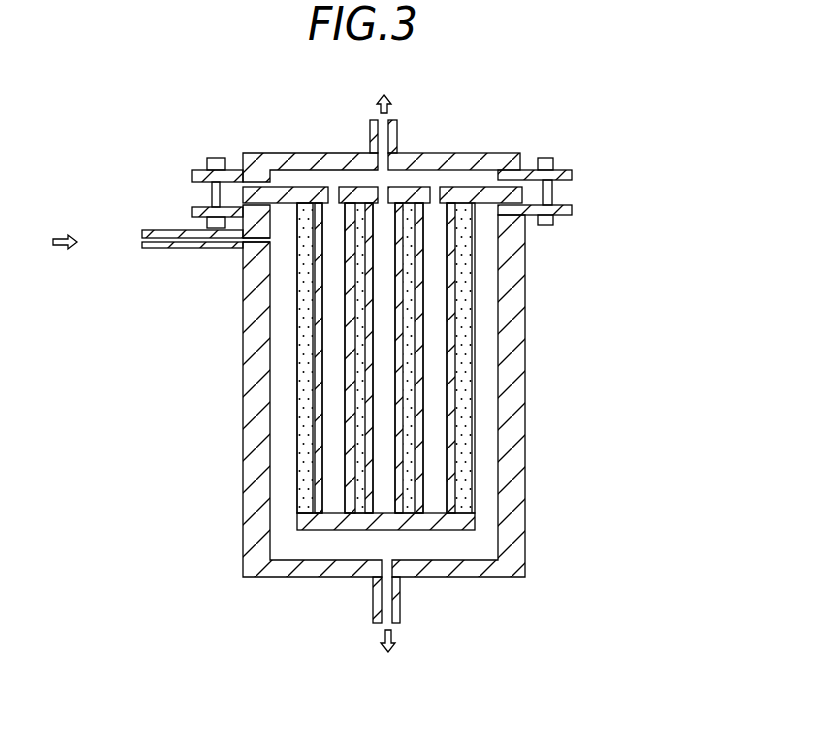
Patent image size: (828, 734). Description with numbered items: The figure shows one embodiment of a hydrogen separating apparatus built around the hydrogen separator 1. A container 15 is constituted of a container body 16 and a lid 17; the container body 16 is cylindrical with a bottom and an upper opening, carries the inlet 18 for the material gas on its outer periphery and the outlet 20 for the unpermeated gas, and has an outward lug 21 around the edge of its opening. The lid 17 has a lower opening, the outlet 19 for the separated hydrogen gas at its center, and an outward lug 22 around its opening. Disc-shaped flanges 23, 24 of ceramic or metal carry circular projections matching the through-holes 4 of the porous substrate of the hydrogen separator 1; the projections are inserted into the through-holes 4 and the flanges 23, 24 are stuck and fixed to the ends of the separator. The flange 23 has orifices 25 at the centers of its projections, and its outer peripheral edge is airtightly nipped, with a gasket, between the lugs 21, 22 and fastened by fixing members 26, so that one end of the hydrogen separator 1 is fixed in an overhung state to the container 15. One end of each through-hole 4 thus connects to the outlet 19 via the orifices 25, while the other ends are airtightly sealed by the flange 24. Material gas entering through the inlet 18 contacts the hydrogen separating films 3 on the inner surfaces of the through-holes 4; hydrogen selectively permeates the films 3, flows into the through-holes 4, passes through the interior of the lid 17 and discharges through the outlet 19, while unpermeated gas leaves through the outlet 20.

The hydrogen separator 1 is at (475, 362).
The hydrogen separating film 3 is at (455, 272).
The through-hole 4 is at (438, 418).
The container 15 is at (473, 304).
The container body 16 is at (526, 318).
The lid 17 is at (505, 147).
The inlet for material gas 18 is at (177, 250).
The outlet for separated hydrogen gas 19 is at (398, 124).
The outlet for unpermeated gas 20 is at (402, 598).
The outward lug 21 is at (572, 208).
The outward lug 22 is at (575, 160).
The flange 23 is at (522, 189).
The flange 24 is at (476, 530).
The orifice 25 is at (333, 190).
The fixing member 26 is at (208, 158).